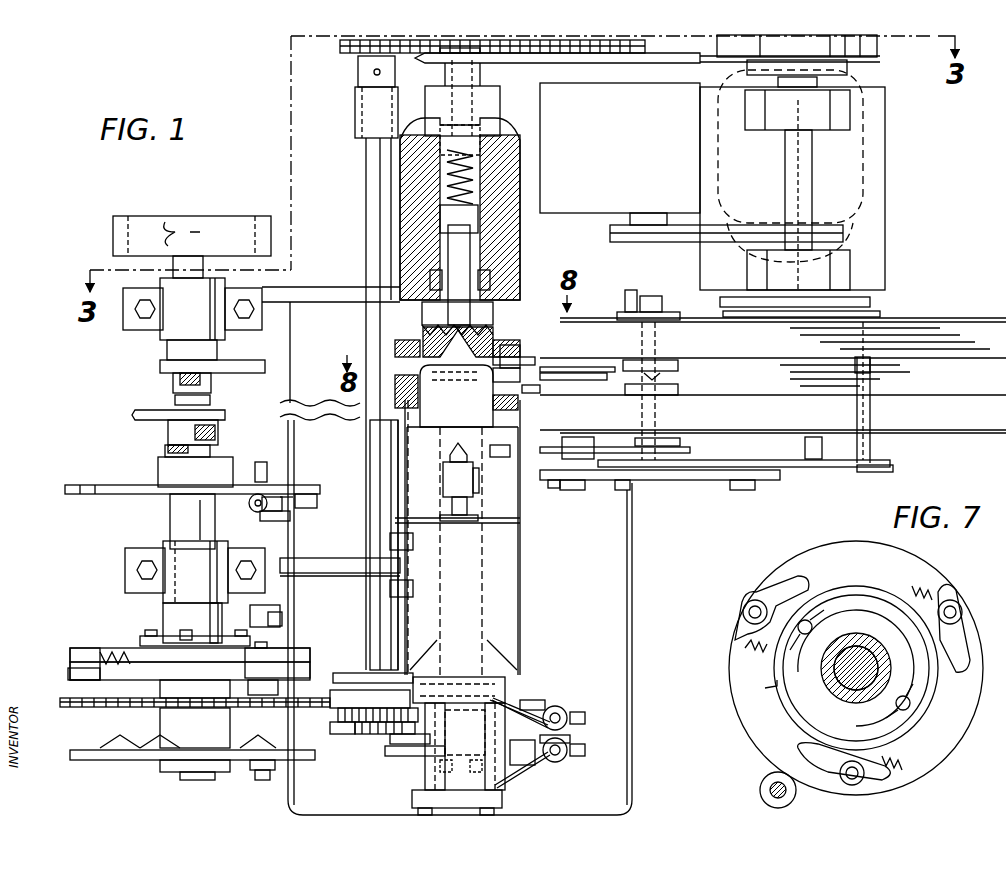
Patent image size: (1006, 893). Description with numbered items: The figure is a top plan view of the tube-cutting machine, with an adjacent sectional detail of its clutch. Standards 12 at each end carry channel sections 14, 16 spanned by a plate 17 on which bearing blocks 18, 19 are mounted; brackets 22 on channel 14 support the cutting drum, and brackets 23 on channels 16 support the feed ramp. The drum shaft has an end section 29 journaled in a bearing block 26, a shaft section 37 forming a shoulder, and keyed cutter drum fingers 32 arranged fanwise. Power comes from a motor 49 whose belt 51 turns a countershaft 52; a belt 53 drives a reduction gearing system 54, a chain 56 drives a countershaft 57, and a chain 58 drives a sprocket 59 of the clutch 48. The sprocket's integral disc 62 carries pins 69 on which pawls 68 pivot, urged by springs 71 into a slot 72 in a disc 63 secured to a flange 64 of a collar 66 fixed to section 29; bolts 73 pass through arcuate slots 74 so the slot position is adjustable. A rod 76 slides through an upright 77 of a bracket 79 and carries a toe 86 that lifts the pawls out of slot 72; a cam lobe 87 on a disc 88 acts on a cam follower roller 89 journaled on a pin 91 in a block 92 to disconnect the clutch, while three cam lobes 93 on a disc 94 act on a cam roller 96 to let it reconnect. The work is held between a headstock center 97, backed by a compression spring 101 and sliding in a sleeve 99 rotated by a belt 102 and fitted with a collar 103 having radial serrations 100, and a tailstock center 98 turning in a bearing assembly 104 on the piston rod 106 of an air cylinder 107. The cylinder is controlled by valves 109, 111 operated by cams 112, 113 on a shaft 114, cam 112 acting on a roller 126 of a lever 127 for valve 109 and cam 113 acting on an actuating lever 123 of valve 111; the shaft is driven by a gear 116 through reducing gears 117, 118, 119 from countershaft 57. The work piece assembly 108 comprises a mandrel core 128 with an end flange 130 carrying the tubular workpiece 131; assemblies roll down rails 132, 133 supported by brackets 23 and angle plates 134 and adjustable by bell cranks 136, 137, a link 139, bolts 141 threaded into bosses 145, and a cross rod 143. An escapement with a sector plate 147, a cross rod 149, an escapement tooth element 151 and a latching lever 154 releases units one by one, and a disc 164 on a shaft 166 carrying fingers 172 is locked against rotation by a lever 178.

In FIG. 1, the standard 12 is at (365, 203).
In FIG. 1, the channel section 14 is at (410, 456).
In FIG. 1, the channel section 16 is at (480, 435).
In FIG. 1, the plate 17 is at (415, 520).
In FIG. 1, the bearing block 18 is at (505, 580).
In FIG. 1, the bearing block 19 is at (520, 230).
In FIG. 1, the bracket 22 is at (335, 555).
In FIG. 1, the bracket 23 is at (885, 460).
In FIG. 1, the bearing block 26 is at (178, 545).
In FIG. 1, the end section of shaft 29 is at (212, 780).
In FIG. 7, the end section of shaft 29 is at (878, 666).
In FIG. 1, the cutter drum finger 32 is at (160, 370).
In FIG. 1, the shaft section 37 is at (168, 450).
In FIG. 1, the clutch mechanism 48 is at (105, 642).
In FIG. 7, the clutch mechanism 48 is at (722, 646).
In FIG. 1, the motor 49 is at (865, 180).
In FIG. 1, the belt 51 is at (880, 47).
In FIG. 1, the countershaft 52 is at (810, 152).
In FIG. 1, the belt 53 is at (728, 232).
In FIG. 1, the reduction gearing system 54 is at (620, 154).
In FIG. 1, the chain 56 is at (340, 47).
In FIG. 1, the countershaft 57 is at (370, 618).
In FIG. 1, the chain 58 is at (105, 715).
In FIG. 1, the sprocket 59 is at (60, 702).
In FIG. 1, the disc 62 is at (68, 675).
In FIG. 7, the disc 62 is at (965, 690).
In FIG. 1, the disc 63 is at (155, 665).
In FIG. 7, the disc 63 is at (922, 680).
In FIG. 1, the flange 64 is at (140, 640).
In FIG. 7, the flange 64 is at (878, 592).
In FIG. 1, the collar 66 is at (160, 612).
In FIG. 7, the collar 66 is at (820, 688).
In FIG. 1, the pawl 68 is at (308, 660).
In FIG. 7, the pawl 68 is at (760, 595).
In FIG. 1, the pin 69 is at (70, 660).
In FIG. 7, the pin 69 is at (743, 612).
In FIG. 1, the spring 71 is at (110, 664).
In FIG. 7, the spring 71 is at (745, 648).
In FIG. 7, the slot 72 is at (765, 688).
In FIG. 1, the bolt 73 is at (205, 622).
In FIG. 7, the bolt 73 is at (808, 620).
In FIG. 7, the arcuate slot 74 is at (812, 627).
In FIG. 1, the rod 76 is at (272, 465).
In FIG. 7, the rod 76 is at (766, 794).
In FIG. 1, the upright 77 is at (255, 775).
In FIG. 1, the bracket 79 is at (215, 605).
In FIG. 1, the toe 86 is at (280, 612).
In FIG. 7, the toe 86 is at (761, 782).
In FIG. 1, the cam lobe 87 is at (317, 498).
In FIG. 1, the disc 88 is at (320, 490).
In FIG. 1, the cam follower roller 89 is at (290, 515).
In FIG. 1, the pin 91 is at (252, 510).
In FIG. 1, the block 92 is at (282, 505).
In FIG. 1, the cam lobe 93 is at (130, 735).
In FIG. 1, the disc 94 is at (140, 760).
In FIG. 1, the cam roller 96 is at (275, 690).
In FIG. 1, the headstock center 97 is at (470, 268).
In FIG. 1, the tailstock center 98 is at (450, 452).
In FIG. 1, the sleeve 99 is at (478, 250).
In FIG. 1, the radial serrations 100 is at (422, 318).
In FIG. 1, the compression spring 101 is at (462, 180).
In FIG. 1, the belt 102 is at (658, 62).
In FIG. 1, the collar 103 is at (490, 295).
In FIG. 1, the antifriction bearing assembly 104 is at (479, 488).
In FIG. 1, the piston rod 106 is at (478, 510).
In FIG. 1, the air cylinder 107 is at (505, 785).
In FIG. 1, the work piece assembly 108 is at (520, 343).
In FIG. 1, the valve 109 is at (567, 712).
In FIG. 1, the valve 111 is at (567, 745).
In FIG. 1, the cam 112 is at (505, 692).
In FIG. 1, the cam 113 is at (385, 751).
In FIG. 1, the shaft 114 is at (440, 775).
In FIG. 1, the gear 116 is at (390, 739).
In FIG. 1, the reducing gear 117 is at (355, 726).
In FIG. 1, the reducing gear 118 is at (338, 712).
In FIG. 1, the reducing gear 119 is at (338, 734).
In FIG. 1, the actuating lever 123 is at (540, 770).
In FIG. 1, the roller 126 is at (540, 710).
In FIG. 1, the lever 127 is at (461, 755).
In FIG. 1, the mandrel core 128 is at (535, 360).
In FIG. 1, the end flange 130 is at (400, 345).
In FIG. 1, the workpiece 131 is at (395, 388).
In FIG. 1, the rail 132 is at (955, 318).
In FIG. 1, the rail 133 is at (958, 395).
In FIG. 1, the angle plate 134 is at (560, 484).
In FIG. 1, the bell crank 136 is at (630, 480).
In FIG. 1, the bell crank 137 is at (870, 472).
In FIG. 1, the link 139 is at (705, 480).
In FIG. 1, the bolt 141 is at (600, 490).
In FIG. 1, the cross rod 143 is at (870, 380).
In FIG. 1, the boss 145 is at (578, 437).
In FIG. 1, the sector plate 147 is at (660, 296).
In FIG. 1, the cross rod 149 is at (660, 378).
In FIG. 1, the escapement tooth element 151 is at (672, 360).
In FIG. 1, the lever 154 is at (590, 305).
In FIG. 1, the disc 164 is at (500, 457).
In FIG. 1, the shaft 166 is at (540, 389).
In FIG. 1, the finger 172 is at (603, 366).
In FIG. 1, the lever 178 is at (590, 447).